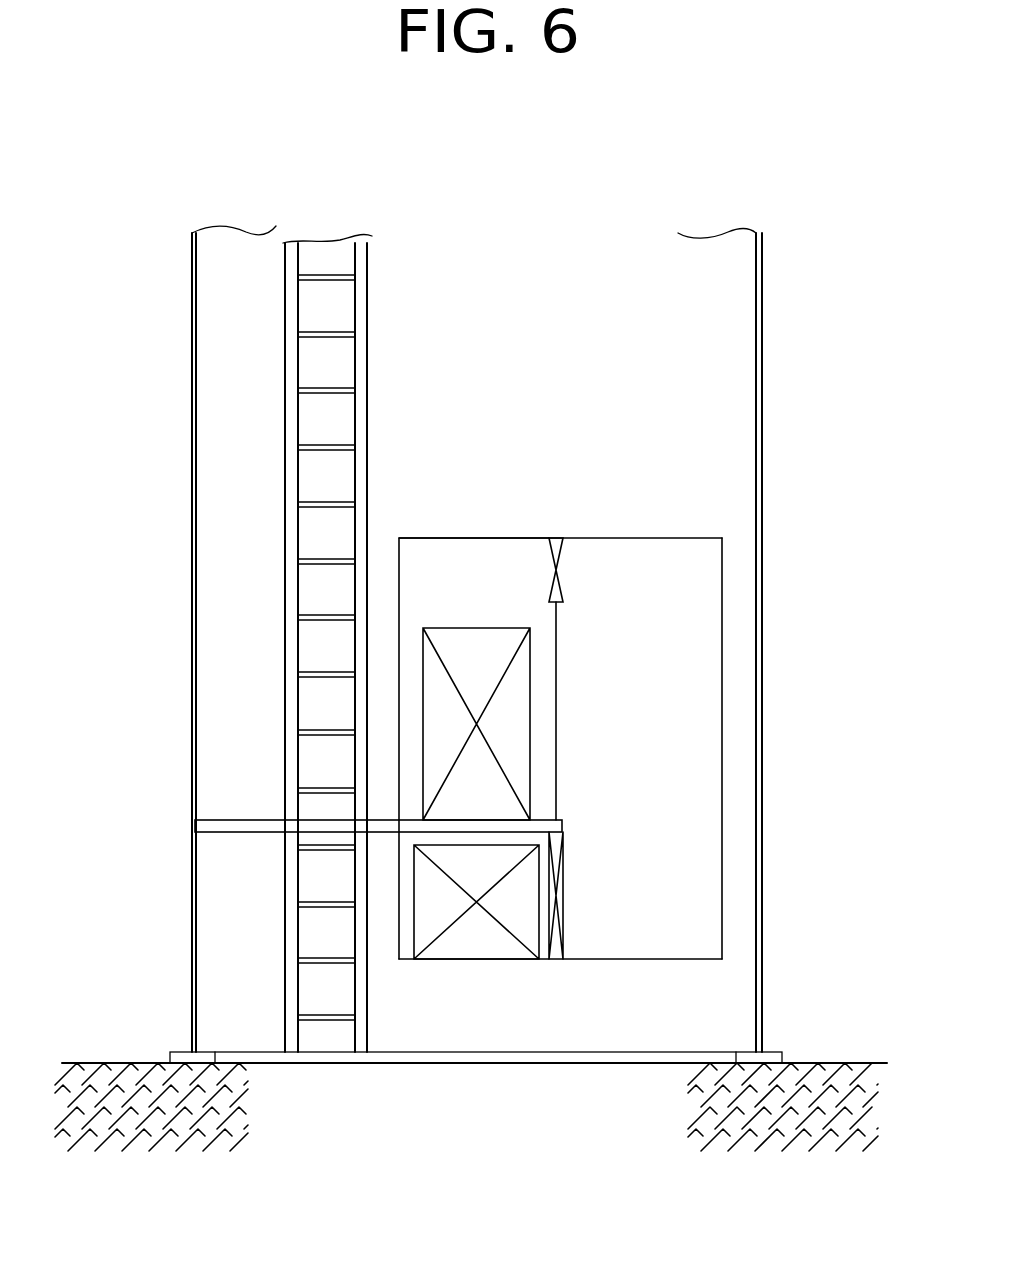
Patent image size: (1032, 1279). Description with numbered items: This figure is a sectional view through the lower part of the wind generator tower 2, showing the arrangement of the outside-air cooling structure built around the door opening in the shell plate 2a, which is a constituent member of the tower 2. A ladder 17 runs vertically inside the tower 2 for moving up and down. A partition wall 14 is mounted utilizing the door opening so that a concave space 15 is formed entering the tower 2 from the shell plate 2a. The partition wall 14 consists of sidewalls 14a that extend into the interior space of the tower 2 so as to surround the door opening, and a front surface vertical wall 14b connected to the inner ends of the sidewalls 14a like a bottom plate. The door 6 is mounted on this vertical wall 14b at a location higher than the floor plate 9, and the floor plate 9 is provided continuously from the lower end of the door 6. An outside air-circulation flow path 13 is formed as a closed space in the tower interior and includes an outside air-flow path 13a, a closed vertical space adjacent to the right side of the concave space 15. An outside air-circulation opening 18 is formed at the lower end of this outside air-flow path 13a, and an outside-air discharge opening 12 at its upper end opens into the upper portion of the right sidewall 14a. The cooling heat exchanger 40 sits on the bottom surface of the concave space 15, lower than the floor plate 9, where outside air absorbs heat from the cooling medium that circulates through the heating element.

The tower 2 is at (785, 620).
The shell plate 2a is at (762, 358).
The door 6 is at (508, 735).
The floor plate 9 is at (232, 818).
The outside-air discharge opening 12 is at (556, 568).
The outside air-circulation flow path 13 is at (541, 768).
The outside air-flow path 13a is at (690, 756).
The partition wall 14 is at (468, 768).
The sidewalls 14a is at (462, 538).
The front surface vertical wall 14b is at (637, 930).
The concave space 15 is at (432, 548).
The ladder 17 is at (368, 311).
The outside air-circulation opening 18 is at (556, 893).
The cooling heat exchanger 40 is at (458, 943).